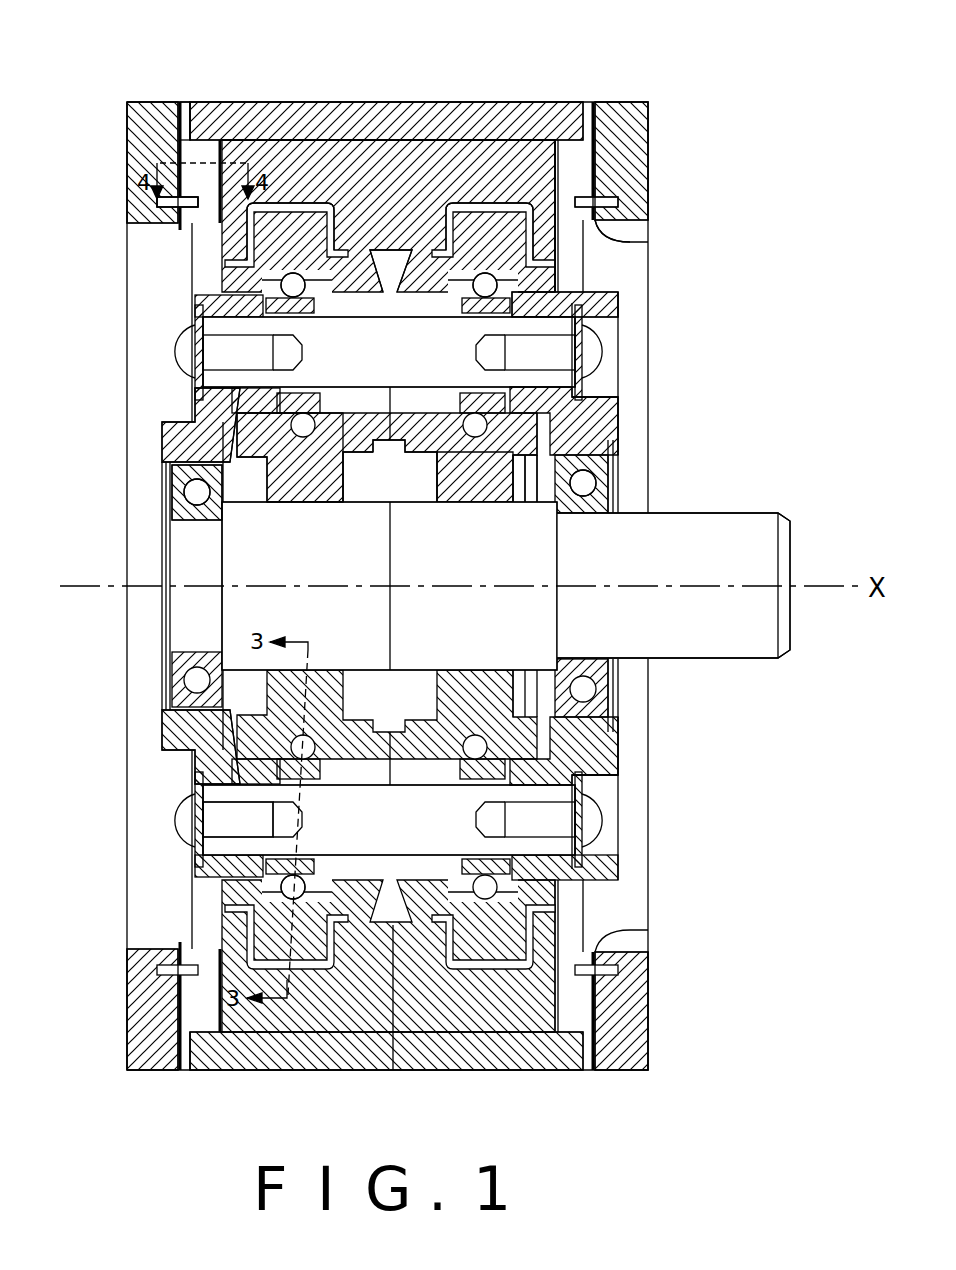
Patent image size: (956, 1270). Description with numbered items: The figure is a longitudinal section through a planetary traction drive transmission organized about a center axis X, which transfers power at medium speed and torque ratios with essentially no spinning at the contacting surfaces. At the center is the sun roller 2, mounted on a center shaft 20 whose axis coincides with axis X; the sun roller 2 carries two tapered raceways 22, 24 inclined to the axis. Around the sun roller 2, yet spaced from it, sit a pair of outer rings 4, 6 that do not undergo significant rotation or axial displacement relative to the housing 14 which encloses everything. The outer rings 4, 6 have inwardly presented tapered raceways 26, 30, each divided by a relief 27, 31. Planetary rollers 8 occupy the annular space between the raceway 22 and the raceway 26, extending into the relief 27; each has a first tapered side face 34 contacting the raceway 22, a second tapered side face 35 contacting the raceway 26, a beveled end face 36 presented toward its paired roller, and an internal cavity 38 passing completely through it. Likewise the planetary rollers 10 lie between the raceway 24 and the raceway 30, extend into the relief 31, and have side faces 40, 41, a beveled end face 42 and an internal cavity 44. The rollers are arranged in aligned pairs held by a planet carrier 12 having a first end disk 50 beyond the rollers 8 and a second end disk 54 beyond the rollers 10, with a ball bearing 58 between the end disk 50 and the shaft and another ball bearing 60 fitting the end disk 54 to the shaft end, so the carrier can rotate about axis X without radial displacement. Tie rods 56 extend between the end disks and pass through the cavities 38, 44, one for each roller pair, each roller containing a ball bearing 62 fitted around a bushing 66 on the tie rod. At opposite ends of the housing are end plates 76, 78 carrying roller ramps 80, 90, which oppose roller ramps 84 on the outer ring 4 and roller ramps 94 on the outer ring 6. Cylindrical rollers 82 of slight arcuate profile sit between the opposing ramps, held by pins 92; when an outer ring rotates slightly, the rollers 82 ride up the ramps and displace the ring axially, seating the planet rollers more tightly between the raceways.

The sun roller 2 is at (520, 560).
The outer ring 4 is at (628, 103).
The outer ring 6 is at (318, 160).
The planetary rollers 8 is at (655, 213).
The planetary rollers 10 is at (212, 255).
The planet carrier 12 is at (622, 302).
The housing 14 is at (545, 102).
The center shaft 20 is at (765, 512).
The tapered raceway 22 is at (410, 482).
The tapered raceway 24 is at (363, 482).
The tapered raceway 26 is at (560, 247).
The relief 27 is at (495, 168).
The tapered raceway 30 is at (268, 240).
The relief 31 is at (300, 177).
The first tapered side face 34 is at (473, 505).
The second tapered side face 35 is at (528, 455).
The beveled end face 36 is at (393, 1070).
The internal cavity 38 is at (625, 762).
The first tapered side face 40 is at (308, 503).
The second tapered side face 41 is at (232, 505).
The beveled end face 42 is at (384, 252).
The internal cavity 44 is at (235, 775).
The first end disk 50 is at (630, 405).
The second end disk 54 is at (160, 425).
The tie rods 56 is at (402, 362).
The ball bearing 58 is at (585, 483).
The ball bearing 60 is at (193, 493).
The ball bearing 62 is at (283, 892).
The bushing 66 is at (275, 846).
The end plate 76 is at (650, 1010).
The end plate 78 is at (126, 1000).
The roller ramps 80 is at (612, 232).
The cylindrical rollers 82 is at (180, 130).
The roller ramps 84 is at (573, 170).
The roller ramps 90 is at (180, 235).
The pins 92 is at (620, 199).
The roller ramps 94 is at (168, 150).